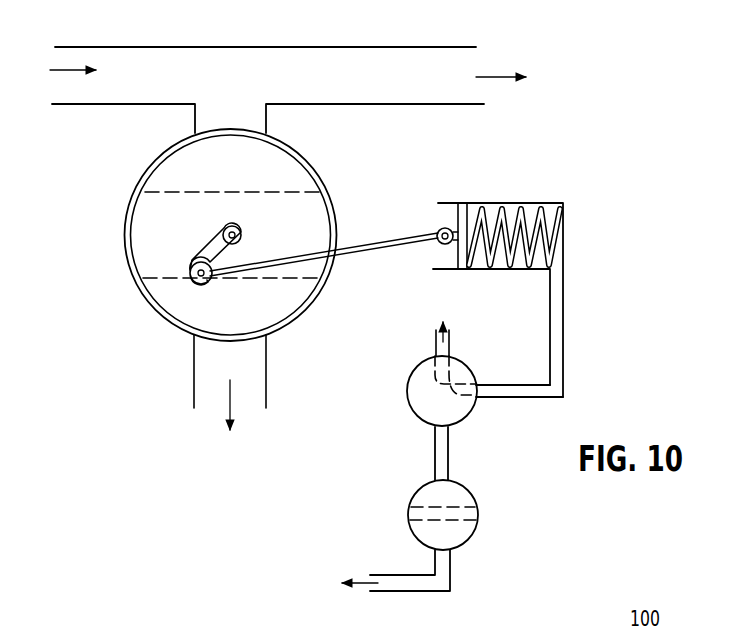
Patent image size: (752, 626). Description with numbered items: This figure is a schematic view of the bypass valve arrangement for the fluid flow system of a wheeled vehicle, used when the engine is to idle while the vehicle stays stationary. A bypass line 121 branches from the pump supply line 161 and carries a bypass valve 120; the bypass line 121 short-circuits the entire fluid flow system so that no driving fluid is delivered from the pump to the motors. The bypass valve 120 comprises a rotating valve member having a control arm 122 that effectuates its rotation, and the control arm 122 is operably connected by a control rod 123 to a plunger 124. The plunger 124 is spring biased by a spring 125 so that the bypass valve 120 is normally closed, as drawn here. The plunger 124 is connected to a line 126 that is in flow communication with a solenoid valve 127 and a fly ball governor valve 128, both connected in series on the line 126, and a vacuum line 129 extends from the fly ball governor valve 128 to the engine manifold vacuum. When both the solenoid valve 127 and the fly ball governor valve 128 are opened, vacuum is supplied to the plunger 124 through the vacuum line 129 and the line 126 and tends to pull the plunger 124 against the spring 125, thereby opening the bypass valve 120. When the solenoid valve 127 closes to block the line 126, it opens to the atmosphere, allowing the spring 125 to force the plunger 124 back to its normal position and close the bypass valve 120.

The pump supply line 161 is at (252, 48).
The bypass valve 120 is at (133, 168).
The bypass line 121 is at (210, 370).
The control arm 122 is at (215, 253).
The control rod 123 is at (352, 247).
The plunger 124 is at (462, 217).
The spring 125 is at (542, 217).
The line 126 is at (556, 325).
The solenoid valve 127 is at (417, 386).
The fly ball governor valve 128 is at (458, 496).
The vacuum line 129 is at (420, 587).